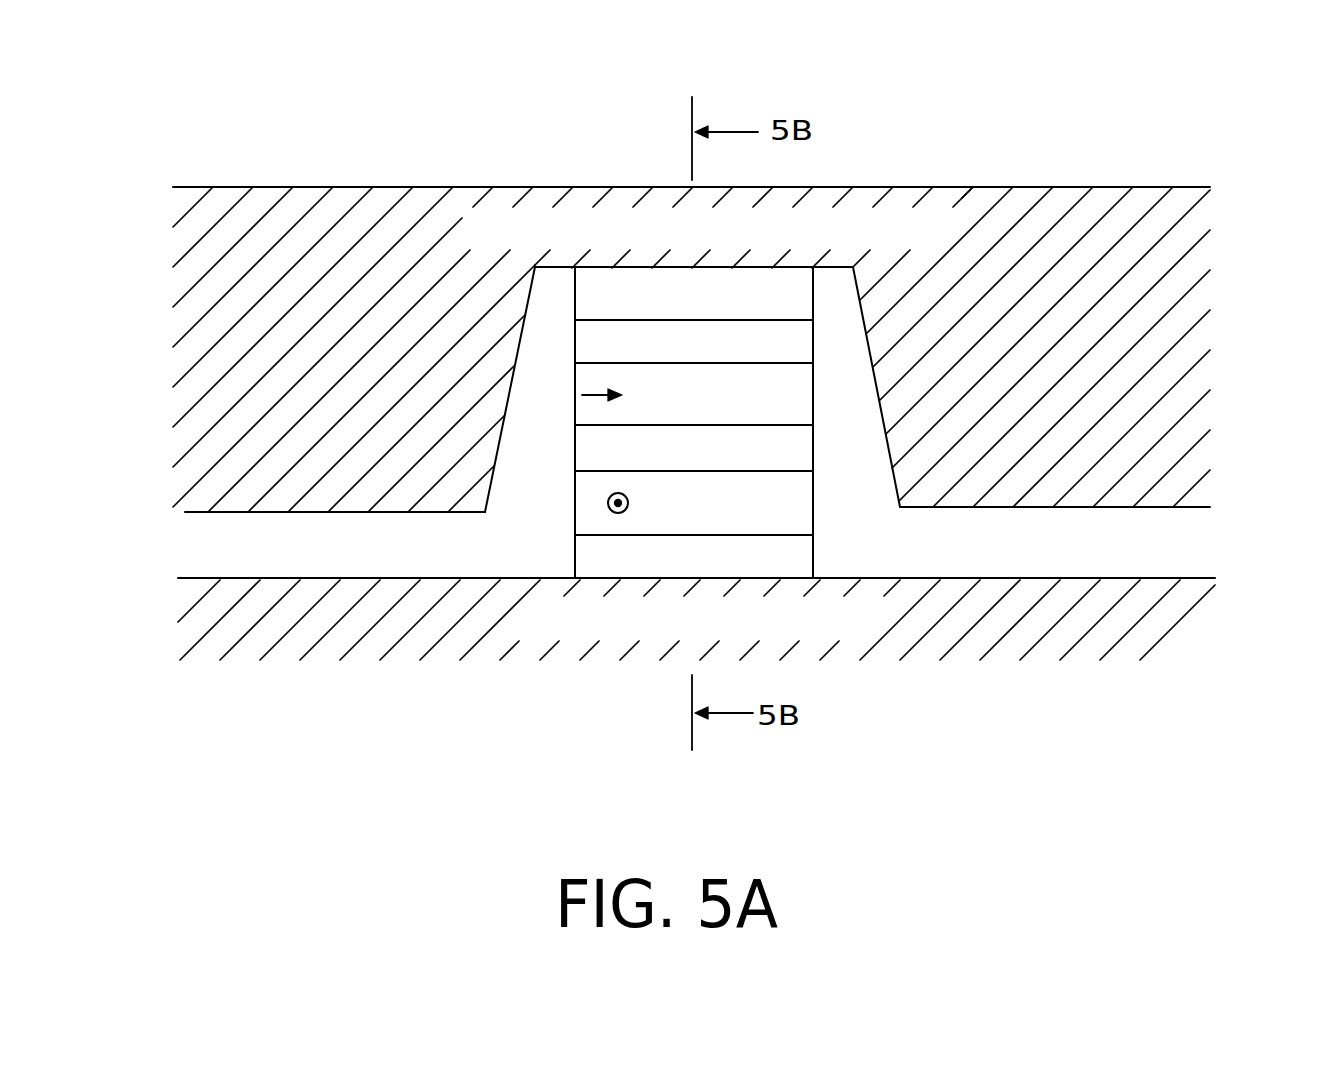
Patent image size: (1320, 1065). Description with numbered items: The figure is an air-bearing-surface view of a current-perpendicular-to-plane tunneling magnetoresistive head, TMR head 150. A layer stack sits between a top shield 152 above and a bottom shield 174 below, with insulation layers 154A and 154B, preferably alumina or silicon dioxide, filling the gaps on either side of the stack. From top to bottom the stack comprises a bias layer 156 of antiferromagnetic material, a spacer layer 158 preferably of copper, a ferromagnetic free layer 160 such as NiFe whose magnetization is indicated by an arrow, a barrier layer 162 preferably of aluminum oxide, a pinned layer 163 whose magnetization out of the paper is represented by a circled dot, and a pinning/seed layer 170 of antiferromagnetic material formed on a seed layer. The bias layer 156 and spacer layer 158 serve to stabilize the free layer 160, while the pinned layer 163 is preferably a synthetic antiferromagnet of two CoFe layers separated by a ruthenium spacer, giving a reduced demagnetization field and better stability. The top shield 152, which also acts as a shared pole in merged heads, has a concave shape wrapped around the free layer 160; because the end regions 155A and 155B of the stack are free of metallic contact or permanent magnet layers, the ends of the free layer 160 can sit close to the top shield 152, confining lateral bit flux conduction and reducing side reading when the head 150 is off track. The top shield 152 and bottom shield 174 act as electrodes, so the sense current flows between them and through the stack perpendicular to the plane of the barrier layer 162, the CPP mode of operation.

The TMR head 150 is at (538, 124).
The top shield 152 is at (863, 187).
The insulation layer 154A is at (481, 571).
The insulation layer 154B is at (1214, 571).
The end region 155A is at (575, 412).
The end region 155B is at (815, 562).
The bias layer 156 is at (805, 302).
The spacer layer 158 is at (803, 347).
The free layer 160 is at (805, 397).
The barrier layer 162 is at (807, 453).
The pinned layer 163 is at (805, 502).
The pinning/seed layer 170 is at (808, 553).
The bottom shield 174 is at (1197, 603).